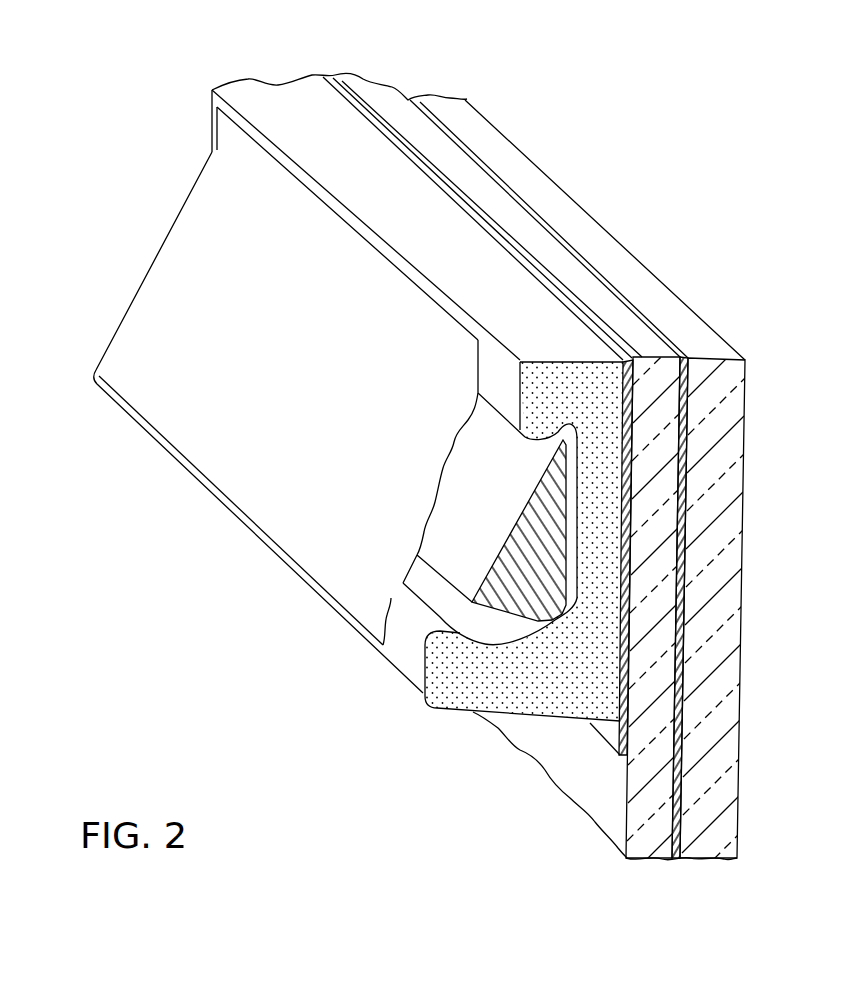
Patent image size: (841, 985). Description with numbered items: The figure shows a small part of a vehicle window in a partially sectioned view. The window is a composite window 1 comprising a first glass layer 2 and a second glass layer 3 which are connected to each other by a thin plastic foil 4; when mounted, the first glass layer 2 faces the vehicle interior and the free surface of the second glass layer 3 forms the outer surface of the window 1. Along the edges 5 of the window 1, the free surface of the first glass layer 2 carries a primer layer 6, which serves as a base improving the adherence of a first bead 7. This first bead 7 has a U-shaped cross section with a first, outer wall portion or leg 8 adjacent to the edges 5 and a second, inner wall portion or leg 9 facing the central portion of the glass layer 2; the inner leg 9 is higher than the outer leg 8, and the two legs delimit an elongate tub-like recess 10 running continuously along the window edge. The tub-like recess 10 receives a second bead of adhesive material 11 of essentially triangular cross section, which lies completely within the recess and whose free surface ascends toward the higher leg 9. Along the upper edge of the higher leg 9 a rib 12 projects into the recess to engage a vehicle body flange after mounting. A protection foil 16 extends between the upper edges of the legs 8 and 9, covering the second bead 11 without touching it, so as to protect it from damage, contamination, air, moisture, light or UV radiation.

The composite window 1 is at (585, 846).
The first glass layer 2 is at (380, 105).
The second glass layer 3 is at (448, 113).
The thin plastic foil 4 is at (675, 856).
The edges of the window 5 is at (522, 264).
The primer layer 6 is at (613, 732).
The first bead 7 is at (463, 740).
The first, outer wall portion or leg 8 is at (270, 107).
The second, inner wall portion or leg 9 is at (440, 693).
The tub-like recess 10 is at (108, 305).
The second bead of adhesive material 11 is at (457, 537).
The rib 12 is at (417, 595).
The protection foil 16 is at (182, 265).